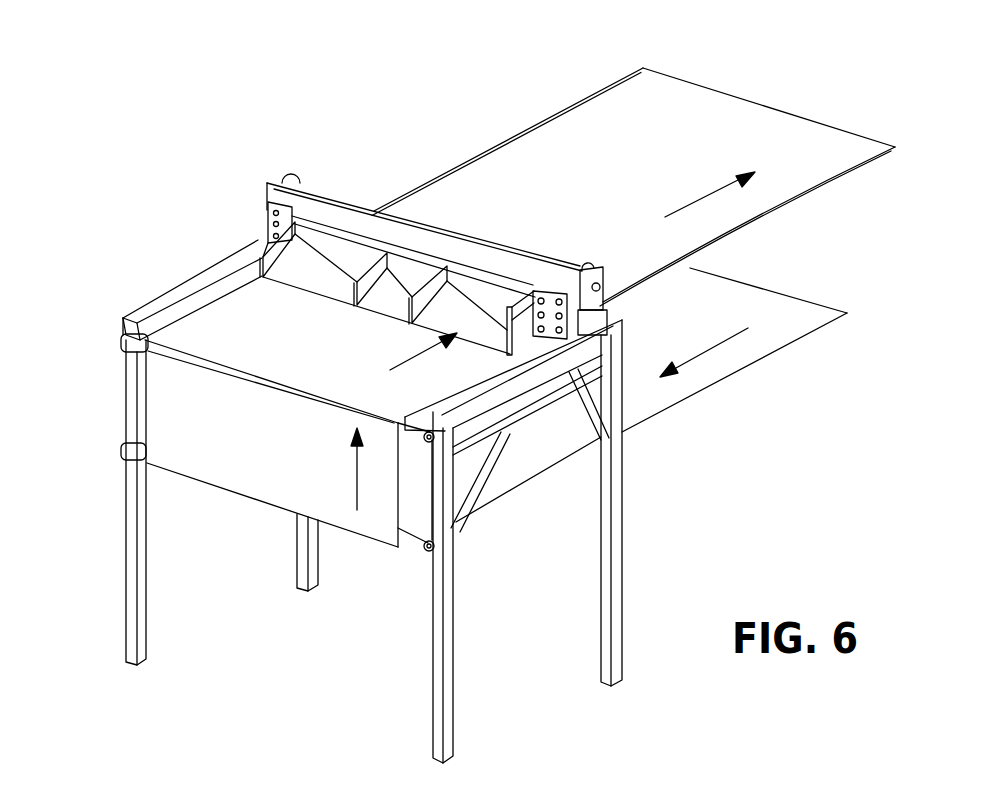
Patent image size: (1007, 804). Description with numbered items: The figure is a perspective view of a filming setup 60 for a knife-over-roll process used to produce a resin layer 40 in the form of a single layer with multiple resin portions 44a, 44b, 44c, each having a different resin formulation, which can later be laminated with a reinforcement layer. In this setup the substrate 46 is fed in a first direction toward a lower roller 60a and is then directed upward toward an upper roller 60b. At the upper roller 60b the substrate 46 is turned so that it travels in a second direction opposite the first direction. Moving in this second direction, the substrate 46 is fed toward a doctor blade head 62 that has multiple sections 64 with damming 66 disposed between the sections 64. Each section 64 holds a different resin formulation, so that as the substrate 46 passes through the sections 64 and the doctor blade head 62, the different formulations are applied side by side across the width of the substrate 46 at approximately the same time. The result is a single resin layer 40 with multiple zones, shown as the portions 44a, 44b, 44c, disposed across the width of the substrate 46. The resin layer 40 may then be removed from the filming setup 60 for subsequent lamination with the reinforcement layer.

The resin layer 40 is at (865, 133).
The resin portion 44a is at (490, 175).
The resin portion 44b is at (660, 133).
The resin portion 44c is at (785, 190).
The substrate 46 is at (743, 357).
The filming setup 60 is at (95, 540).
The lower roller 60a is at (418, 543).
The upper roller 60b is at (120, 342).
The doctor blade head 62 is at (268, 190).
The sections 64 is at (318, 262).
The damming 66 is at (400, 313).